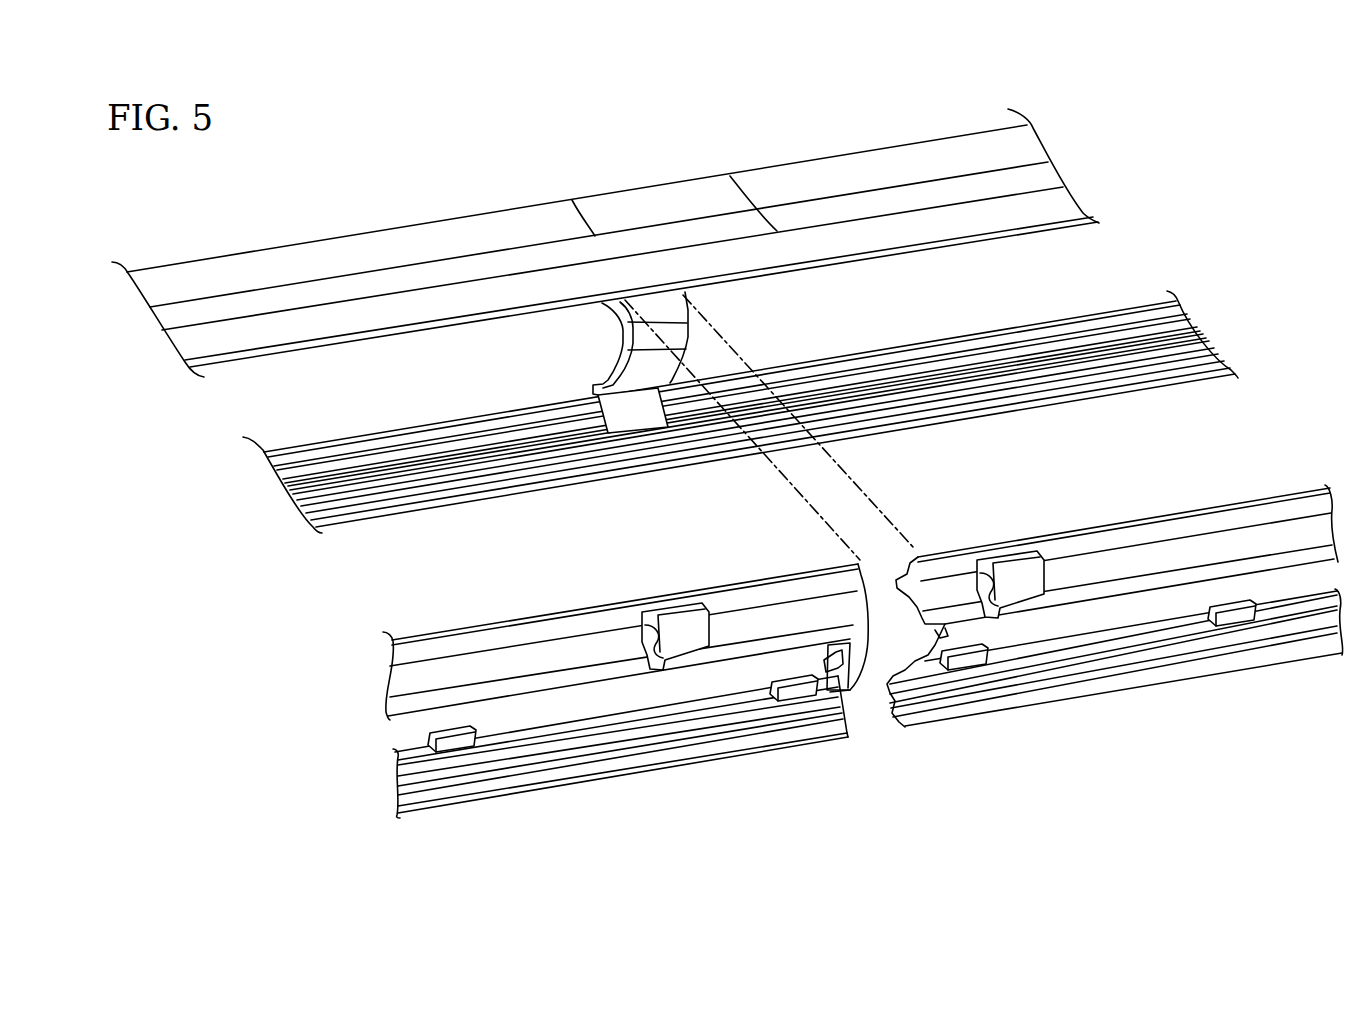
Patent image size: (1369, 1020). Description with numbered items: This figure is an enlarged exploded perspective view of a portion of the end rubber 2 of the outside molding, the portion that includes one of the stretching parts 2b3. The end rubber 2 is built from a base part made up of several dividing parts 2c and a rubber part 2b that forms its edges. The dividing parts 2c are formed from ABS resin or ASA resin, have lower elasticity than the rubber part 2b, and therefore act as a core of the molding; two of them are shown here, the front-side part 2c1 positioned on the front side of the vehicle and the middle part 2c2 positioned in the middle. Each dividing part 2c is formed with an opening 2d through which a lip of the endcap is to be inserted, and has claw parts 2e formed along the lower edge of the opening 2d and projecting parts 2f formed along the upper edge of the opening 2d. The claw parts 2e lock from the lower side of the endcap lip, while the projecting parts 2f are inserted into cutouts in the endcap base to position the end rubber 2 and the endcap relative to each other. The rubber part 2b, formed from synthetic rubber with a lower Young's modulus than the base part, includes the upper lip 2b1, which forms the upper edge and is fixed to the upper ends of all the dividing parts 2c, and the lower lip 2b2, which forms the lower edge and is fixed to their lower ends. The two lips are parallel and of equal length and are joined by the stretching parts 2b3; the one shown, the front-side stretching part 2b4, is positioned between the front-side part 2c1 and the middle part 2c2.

The end rubber 2 is at (953, 127).
The rubber part 2b is at (860, 150).
The upper lip 2b1 is at (484, 224).
The lower lip 2b2 is at (1033, 323).
The stretching part 2b3 is at (727, 362).
The front-side stretching part 2b4 is at (680, 328).
The dividing part 2c is at (863, 669).
The front-side part 2c1 is at (597, 767).
The middle part 2c2 is at (1053, 690).
The opening 2d is at (830, 680).
The claw part 2e is at (450, 740).
The projecting part 2f is at (670, 627).